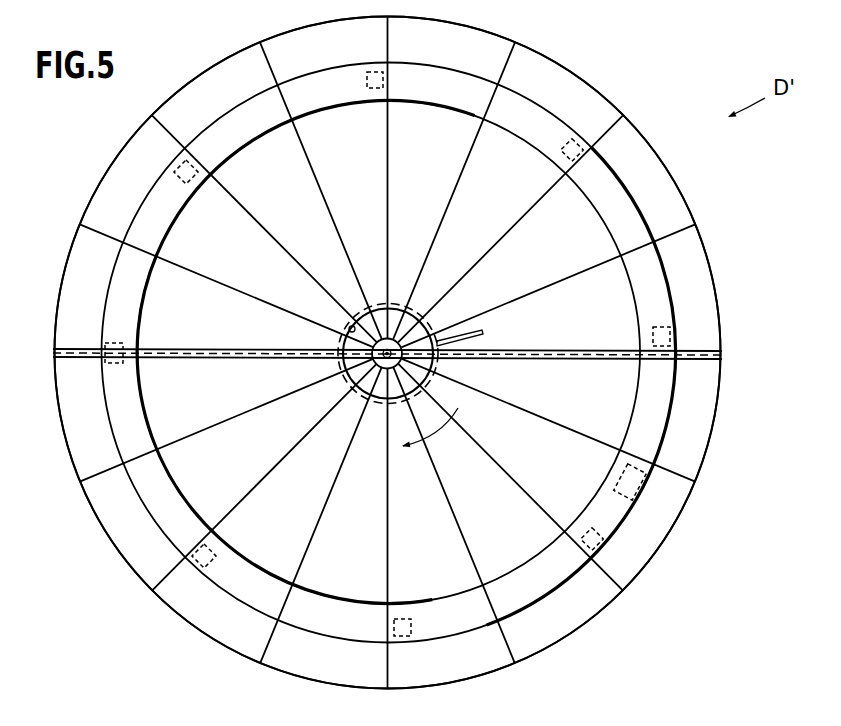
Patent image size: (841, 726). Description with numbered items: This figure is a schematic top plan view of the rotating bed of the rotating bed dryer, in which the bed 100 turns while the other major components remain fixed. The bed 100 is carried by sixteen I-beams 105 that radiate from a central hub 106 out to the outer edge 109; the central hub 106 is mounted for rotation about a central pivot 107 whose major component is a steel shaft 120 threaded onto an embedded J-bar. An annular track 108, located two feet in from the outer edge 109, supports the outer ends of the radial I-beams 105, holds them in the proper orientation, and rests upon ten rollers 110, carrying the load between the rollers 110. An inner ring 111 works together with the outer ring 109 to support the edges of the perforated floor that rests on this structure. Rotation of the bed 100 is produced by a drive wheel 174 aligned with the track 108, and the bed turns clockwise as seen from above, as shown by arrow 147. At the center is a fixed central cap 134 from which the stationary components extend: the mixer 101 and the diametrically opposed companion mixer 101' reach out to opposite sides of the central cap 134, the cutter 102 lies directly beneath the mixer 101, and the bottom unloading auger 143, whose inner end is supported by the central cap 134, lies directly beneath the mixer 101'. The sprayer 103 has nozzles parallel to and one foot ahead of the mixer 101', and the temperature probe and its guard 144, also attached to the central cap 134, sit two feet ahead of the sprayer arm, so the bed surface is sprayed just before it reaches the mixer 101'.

The bed 100 is at (606, 84).
The mixer 101 is at (220, 379).
The cutter 102 is at (255, 362).
The sprayer 103 is at (555, 381).
The companion mixer 101' is at (555, 381).
The bottom unloading auger 143 is at (532, 362).
The I-beams 105 is at (391, 171).
The central hub 106 is at (397, 340).
The central pivot 107 is at (408, 312).
The annular track 108 is at (622, 227).
The outer edge 109 is at (686, 203).
The rollers 110 is at (671, 333).
The inner ring 111 is at (349, 327).
The steel shaft 120 is at (377, 303).
The central cap 134 is at (342, 378).
The temperature probe and its guard 144 is at (483, 336).
The arrow 147 is at (436, 437).
The drive wheel 174 is at (646, 495).